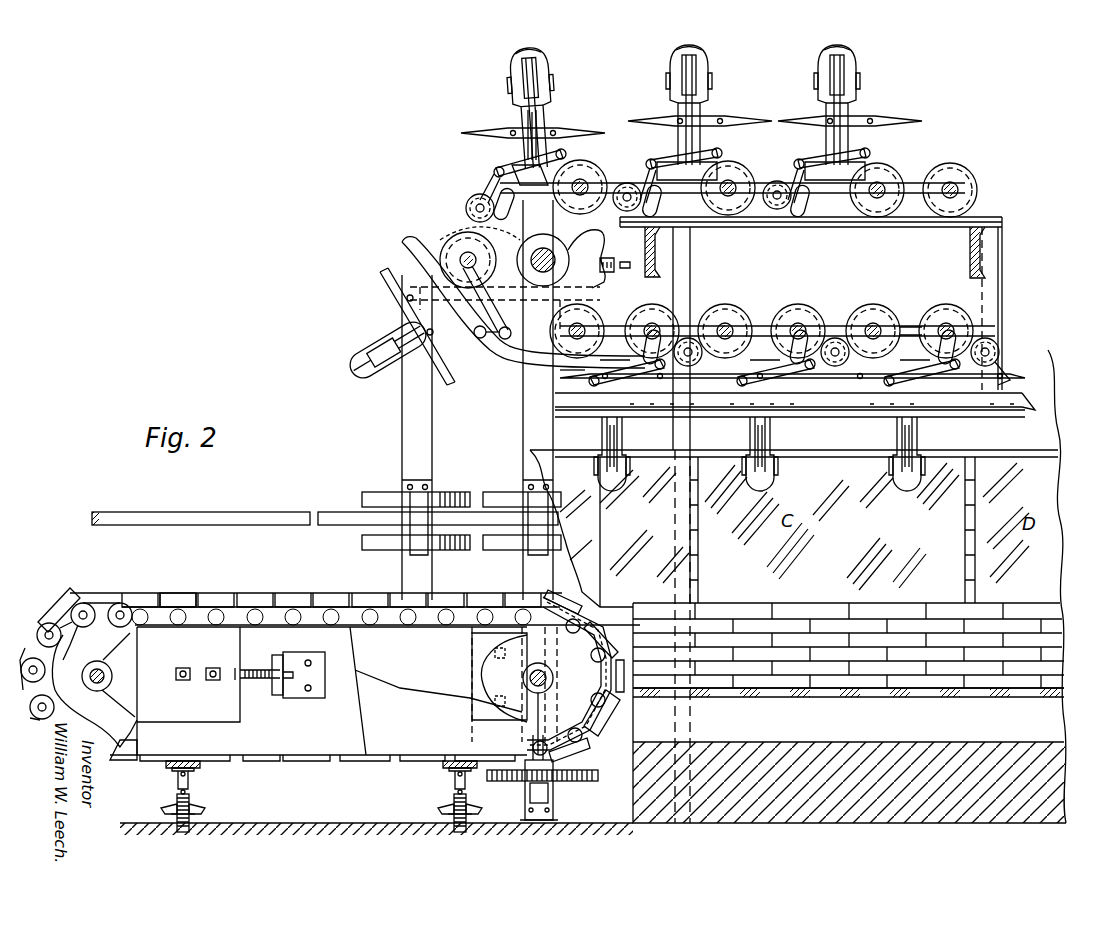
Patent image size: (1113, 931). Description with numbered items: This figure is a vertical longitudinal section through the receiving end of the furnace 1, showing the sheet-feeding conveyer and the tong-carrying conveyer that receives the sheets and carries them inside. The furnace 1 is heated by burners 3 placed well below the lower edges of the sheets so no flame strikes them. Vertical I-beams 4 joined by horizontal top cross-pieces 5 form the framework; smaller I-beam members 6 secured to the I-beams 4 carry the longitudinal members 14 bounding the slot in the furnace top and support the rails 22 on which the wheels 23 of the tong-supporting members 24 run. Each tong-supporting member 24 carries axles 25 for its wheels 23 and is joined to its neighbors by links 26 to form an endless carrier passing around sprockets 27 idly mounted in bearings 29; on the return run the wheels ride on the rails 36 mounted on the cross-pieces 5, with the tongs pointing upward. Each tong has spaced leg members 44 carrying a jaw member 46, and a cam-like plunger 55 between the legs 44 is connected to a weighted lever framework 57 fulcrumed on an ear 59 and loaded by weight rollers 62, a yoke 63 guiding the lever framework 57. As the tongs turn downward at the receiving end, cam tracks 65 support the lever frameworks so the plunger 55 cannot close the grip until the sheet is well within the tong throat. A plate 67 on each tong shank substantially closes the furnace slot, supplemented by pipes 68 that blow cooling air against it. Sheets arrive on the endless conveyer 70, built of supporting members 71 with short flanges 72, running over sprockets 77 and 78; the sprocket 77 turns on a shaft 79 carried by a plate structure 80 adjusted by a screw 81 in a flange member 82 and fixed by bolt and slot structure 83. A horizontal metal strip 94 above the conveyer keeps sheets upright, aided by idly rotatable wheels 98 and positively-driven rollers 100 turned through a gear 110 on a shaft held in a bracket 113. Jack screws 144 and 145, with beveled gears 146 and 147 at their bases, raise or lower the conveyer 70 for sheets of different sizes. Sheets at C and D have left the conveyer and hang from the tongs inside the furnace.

The furnace 1 is at (1030, 628).
The burners 3 is at (1035, 692).
The vertical I-beams 4 is at (690, 268).
The top cross-pieces 5 is at (668, 240).
The smaller I-beam members 6 is at (995, 382).
The longitudinal member 14 is at (1022, 401).
The rails 22 is at (993, 368).
The wheels 23 is at (943, 316).
The tong-supporting members 24 is at (910, 326).
The axles 25 is at (874, 323).
The links 26 is at (830, 326).
The sprockets 27 is at (463, 233).
The bearings 29 is at (590, 272).
The rails 36 is at (826, 224).
The leg members 44 is at (522, 112).
The jaw member 46 is at (510, 72).
The cam-like plunger 55 is at (527, 120).
The weighted lever framework 57 is at (484, 178).
The ear 59 is at (565, 160).
The weight rollers 62 is at (468, 203).
The yoke 63 is at (525, 194).
The cam tracks 65 is at (500, 354).
The plate 67 is at (570, 127).
The pipes 68 is at (712, 412).
The endless conveyer 70 is at (262, 593).
The supporting members 71 is at (55, 615).
The upstanding short flanges 72 is at (180, 593).
The sprocket 77 is at (78, 625).
The sprocket 78 is at (575, 700).
The shaft 79 is at (102, 661).
The plate structure 80 is at (128, 635).
The screw 81 is at (258, 682).
The flange member 82 is at (279, 698).
The bolt and slot structure 83 is at (212, 682).
The horizontal metal strip 94 is at (240, 512).
The idly rotatable wheels 98 is at (376, 492).
The positively-driven rollers 100 is at (500, 492).
The horizontally disposed gear 110 is at (508, 784).
The bracket 113 is at (556, 797).
The vertical jack screw 144 is at (190, 780).
The vertical jack screw 145 is at (452, 782).
The beveled gear 146 is at (198, 806).
The beveled gear 147 is at (444, 808).